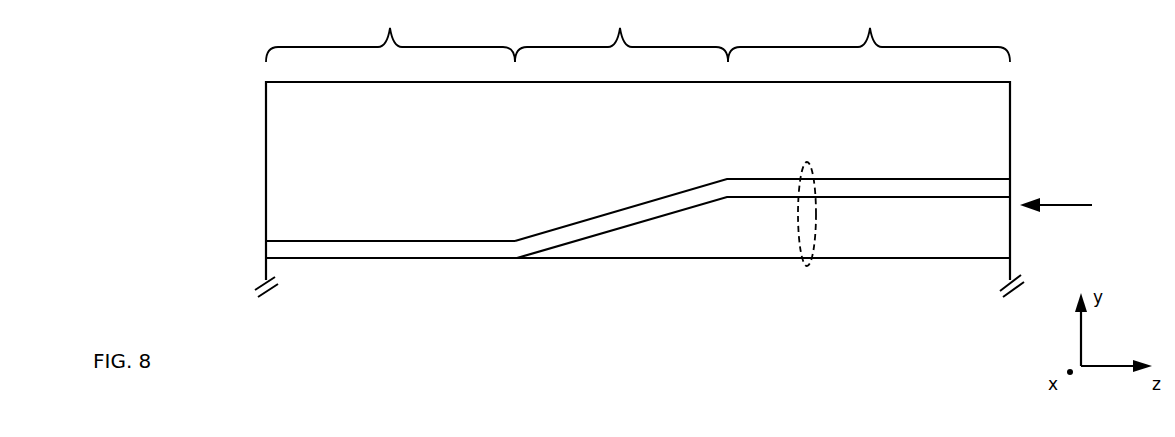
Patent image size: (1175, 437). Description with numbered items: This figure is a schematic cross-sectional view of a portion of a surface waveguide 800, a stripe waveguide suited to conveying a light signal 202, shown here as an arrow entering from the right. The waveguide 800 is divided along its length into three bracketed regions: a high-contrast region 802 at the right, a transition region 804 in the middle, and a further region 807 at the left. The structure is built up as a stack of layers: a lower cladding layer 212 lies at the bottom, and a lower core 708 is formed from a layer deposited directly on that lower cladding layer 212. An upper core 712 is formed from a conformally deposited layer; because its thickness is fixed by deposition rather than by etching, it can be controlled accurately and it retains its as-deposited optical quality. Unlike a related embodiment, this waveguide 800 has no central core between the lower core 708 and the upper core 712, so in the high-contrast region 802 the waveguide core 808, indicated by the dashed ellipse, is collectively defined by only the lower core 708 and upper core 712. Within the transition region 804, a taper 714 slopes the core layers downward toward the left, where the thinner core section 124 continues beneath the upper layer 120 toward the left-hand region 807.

The waveguide 800 is at (178, 92).
The first waveguide section 807 is at (390, 31).
The transition region 804 is at (621, 31).
The high-contrast region 802 is at (869, 31).
The waveguide core 808 is at (808, 163).
The upper cladding layer 120 is at (992, 133).
The waveguide core 124 is at (444, 250).
The upper core 712 is at (657, 204).
The taper 714 is at (683, 222).
The lower core 708 is at (992, 246).
The lower cladding layer 212 is at (992, 298).
The light signal 202 is at (1063, 219).